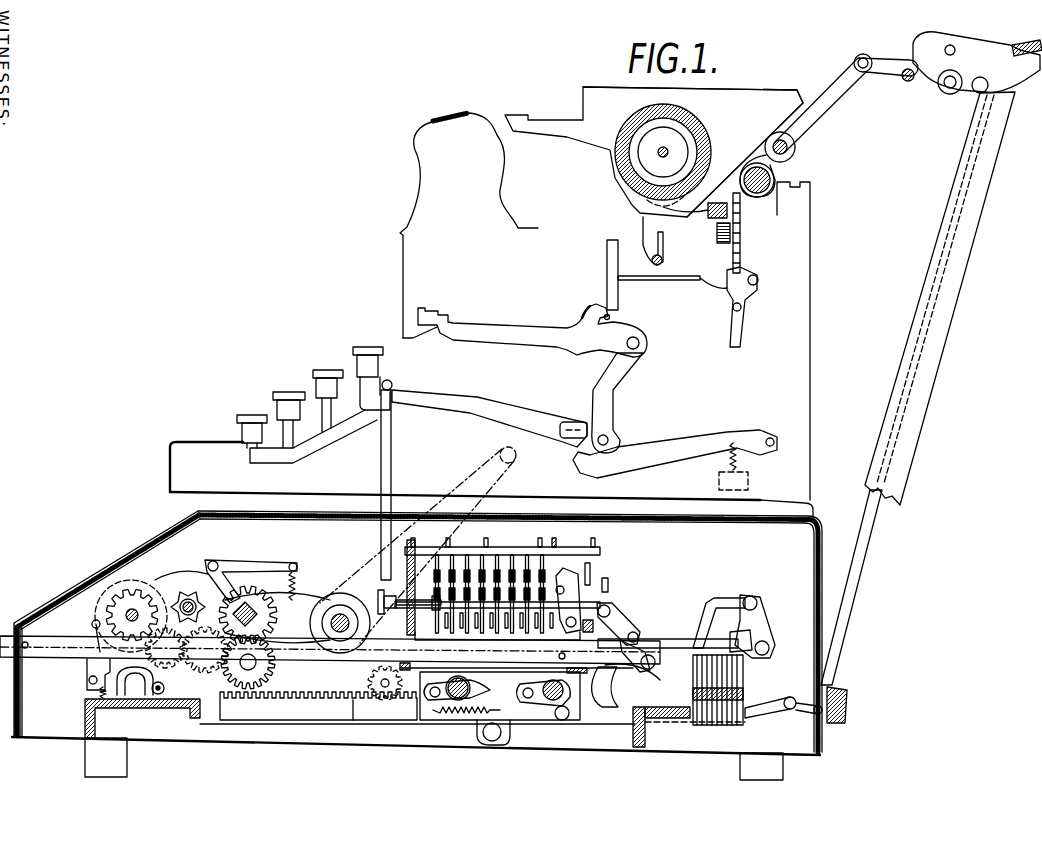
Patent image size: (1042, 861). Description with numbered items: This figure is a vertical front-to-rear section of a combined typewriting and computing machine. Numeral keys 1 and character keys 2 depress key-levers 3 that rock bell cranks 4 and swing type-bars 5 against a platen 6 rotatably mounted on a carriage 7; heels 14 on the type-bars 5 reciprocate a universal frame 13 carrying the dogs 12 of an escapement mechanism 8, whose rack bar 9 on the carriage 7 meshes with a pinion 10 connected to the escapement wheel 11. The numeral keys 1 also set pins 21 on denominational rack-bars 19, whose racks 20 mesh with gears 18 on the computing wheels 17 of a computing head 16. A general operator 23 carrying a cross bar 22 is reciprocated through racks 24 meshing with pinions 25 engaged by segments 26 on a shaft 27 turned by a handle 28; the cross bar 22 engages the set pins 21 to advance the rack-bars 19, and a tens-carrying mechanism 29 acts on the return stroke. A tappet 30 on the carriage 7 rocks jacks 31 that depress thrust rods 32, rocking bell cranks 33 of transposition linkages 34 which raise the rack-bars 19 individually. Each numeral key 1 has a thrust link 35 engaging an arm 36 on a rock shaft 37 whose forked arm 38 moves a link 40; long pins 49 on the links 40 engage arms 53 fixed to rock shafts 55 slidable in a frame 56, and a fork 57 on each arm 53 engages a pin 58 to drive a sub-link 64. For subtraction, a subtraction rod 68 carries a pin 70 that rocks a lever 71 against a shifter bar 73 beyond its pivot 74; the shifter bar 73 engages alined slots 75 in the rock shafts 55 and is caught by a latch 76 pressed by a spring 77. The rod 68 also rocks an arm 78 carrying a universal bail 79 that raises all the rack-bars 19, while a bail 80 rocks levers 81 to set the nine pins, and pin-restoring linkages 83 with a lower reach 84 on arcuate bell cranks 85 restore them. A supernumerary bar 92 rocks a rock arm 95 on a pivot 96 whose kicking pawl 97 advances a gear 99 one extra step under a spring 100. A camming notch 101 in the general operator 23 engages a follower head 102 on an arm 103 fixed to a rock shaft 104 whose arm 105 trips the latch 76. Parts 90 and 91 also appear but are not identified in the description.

The numeral keys 1 is at (366, 347).
The character keys 2 is at (310, 373).
The key-levers 3 is at (489, 418).
The bell cranks 4 is at (675, 413).
The type-bars 5 is at (525, 330).
The platen 6 is at (620, 130).
The carriage 7 is at (693, 152).
The escapement mechanism 8 is at (750, 275).
The rack bar 9 is at (720, 202).
The pinion 10 is at (716, 235).
The escapement wheel 11 is at (741, 226).
The dogs 12 is at (720, 288).
The universal frame 13 is at (648, 281).
The heels 14 is at (588, 309).
The computing head 16 is at (96, 618).
The computing wheels 17 is at (140, 590).
The gears 18 is at (150, 580).
The rack-bars 19 is at (207, 660).
The racks 20 is at (170, 655).
The pins 21 is at (445, 642).
The cross bar 22 is at (595, 687).
The general operator 23 is at (352, 711).
The racks 24 is at (318, 706).
The pinions 25 is at (380, 698).
The segments 26 is at (305, 672).
The shaft 27 is at (322, 605).
The handle 28 is at (500, 458).
The tens-carrying mechanism 29 is at (218, 608).
The tappet 30 is at (912, 50).
The jacks 31 is at (975, 50).
The thrust rods 32 is at (864, 583).
The bell cranks 33 is at (765, 705).
The transposition linkages 34 is at (743, 685).
The thrust link 35 is at (392, 452).
The arm 36 is at (378, 600).
The rock shaft 37 is at (407, 572).
The arms 38 is at (430, 606).
The links 40 is at (448, 555).
The long pins 49 is at (479, 572).
The arms 53 is at (470, 560).
The rock shafts 55 is at (535, 555).
The frame 56 is at (401, 579).
The fork 57 is at (11, 682).
The pin 58 is at (480, 589).
The sub-link 64 is at (446, 622).
The subtraction rod 68 is at (330, 650).
The pin 70 is at (551, 656).
The lever 71 is at (572, 650).
The shifter bar 73 is at (565, 568).
The pivot 74 is at (455, 640).
The alined slots 75 is at (553, 530).
The latch 76 is at (618, 616).
The spring 77 is at (625, 618).
The arm 78 is at (765, 622).
The bail 79 is at (737, 638).
The bail 80 is at (540, 640).
The levers 81 is at (623, 651).
The pin-restoring linkages 83 is at (606, 585).
The lower reach 84 is at (593, 627).
The arcuate bell cranks 85 is at (605, 578).
The pin 90 is at (590, 563).
The spring 91 is at (606, 587).
The supernumerary bar 92 is at (710, 610).
The rock arm 95 is at (125, 677).
The pivot 96 is at (142, 718).
The kicking pawl 97 is at (95, 622).
The gear 99 is at (110, 598).
The spring 100 is at (100, 695).
The camming notch 101 is at (516, 704).
The follower head 102 is at (667, 727).
The arm 103 is at (643, 676).
The rock shaft 104 is at (655, 662).
The arm 105 is at (640, 640).